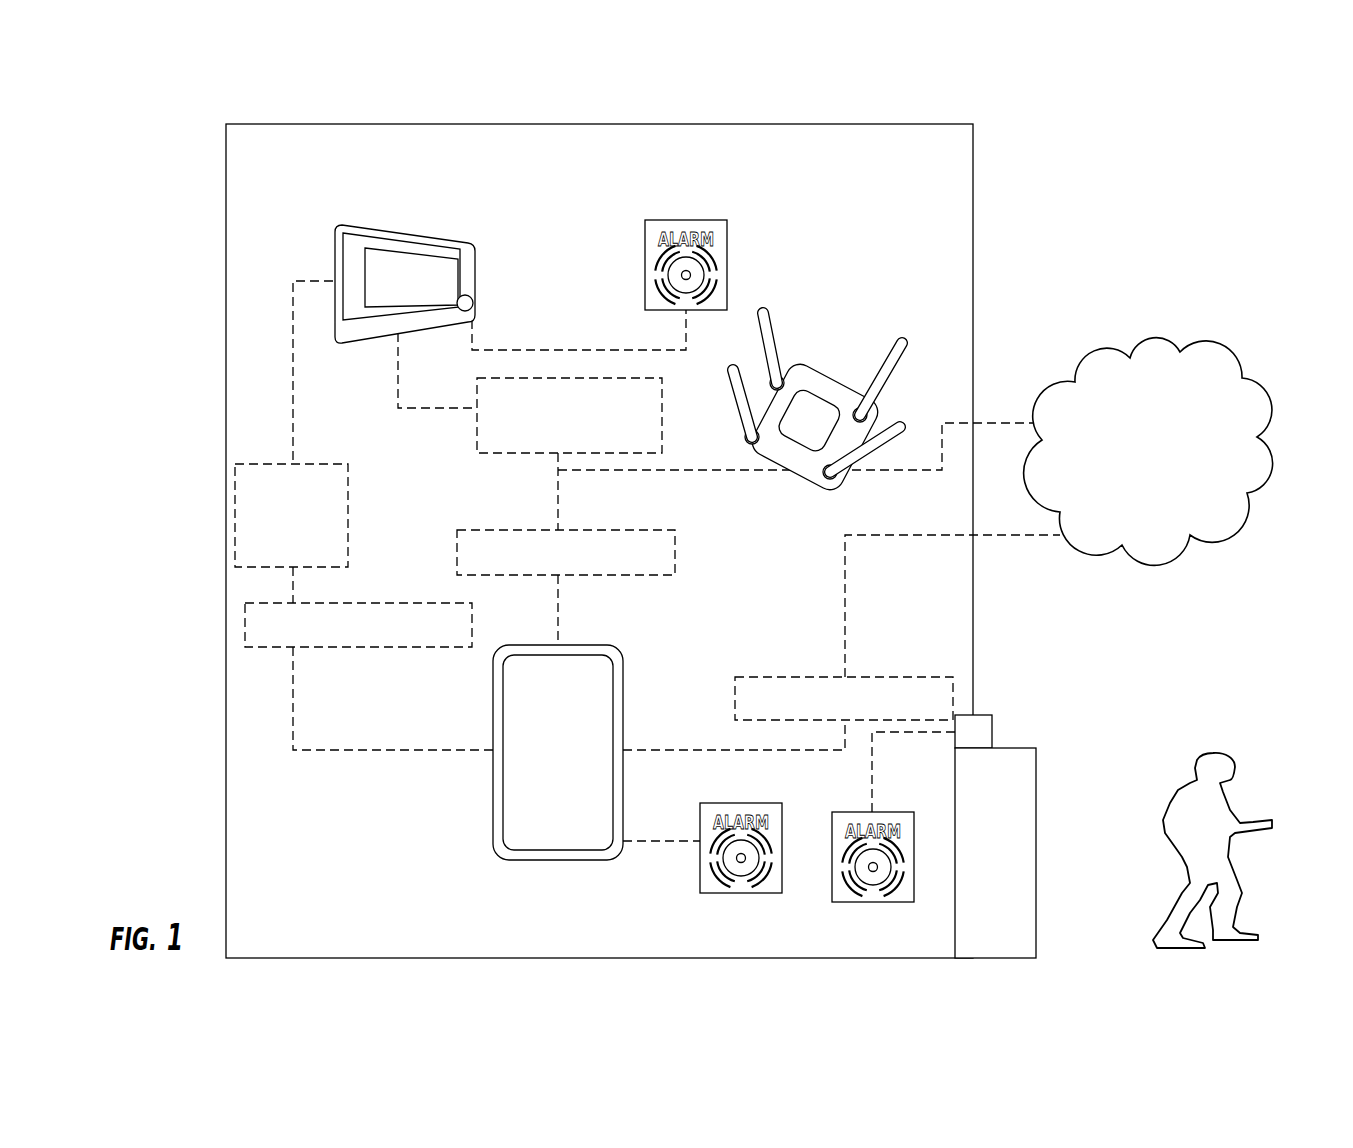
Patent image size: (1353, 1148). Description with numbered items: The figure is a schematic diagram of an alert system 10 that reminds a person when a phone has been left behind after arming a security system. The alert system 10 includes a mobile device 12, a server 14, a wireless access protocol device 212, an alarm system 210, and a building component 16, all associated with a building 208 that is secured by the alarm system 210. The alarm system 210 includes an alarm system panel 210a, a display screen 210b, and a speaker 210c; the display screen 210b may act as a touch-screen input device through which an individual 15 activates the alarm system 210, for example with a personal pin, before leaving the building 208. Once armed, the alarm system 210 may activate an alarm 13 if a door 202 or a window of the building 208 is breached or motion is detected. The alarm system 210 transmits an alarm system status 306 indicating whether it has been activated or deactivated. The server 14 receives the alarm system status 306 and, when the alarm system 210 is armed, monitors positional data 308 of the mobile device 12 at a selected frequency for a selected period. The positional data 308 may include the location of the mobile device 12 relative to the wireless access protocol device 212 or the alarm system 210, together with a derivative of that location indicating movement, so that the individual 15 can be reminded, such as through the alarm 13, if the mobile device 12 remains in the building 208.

The alert system 10 is at (170, 132).
The building 208 is at (457, 124).
The alarm system 210 is at (417, 241).
The alarm system panel 210a is at (380, 240).
The display screen 210b is at (443, 263).
The speaker 210c is at (465, 296).
The alarm 13 is at (645, 240).
The wireless access protocol device 212 is at (805, 372).
The alarm system status 306 is at (313, 464).
The positional data 308 is at (320, 648).
The mobile device 12 is at (565, 770).
The building component 16 is at (983, 715).
The door 202 is at (1025, 750).
The server 14 is at (1207, 322).
The individual 15 is at (1213, 762).